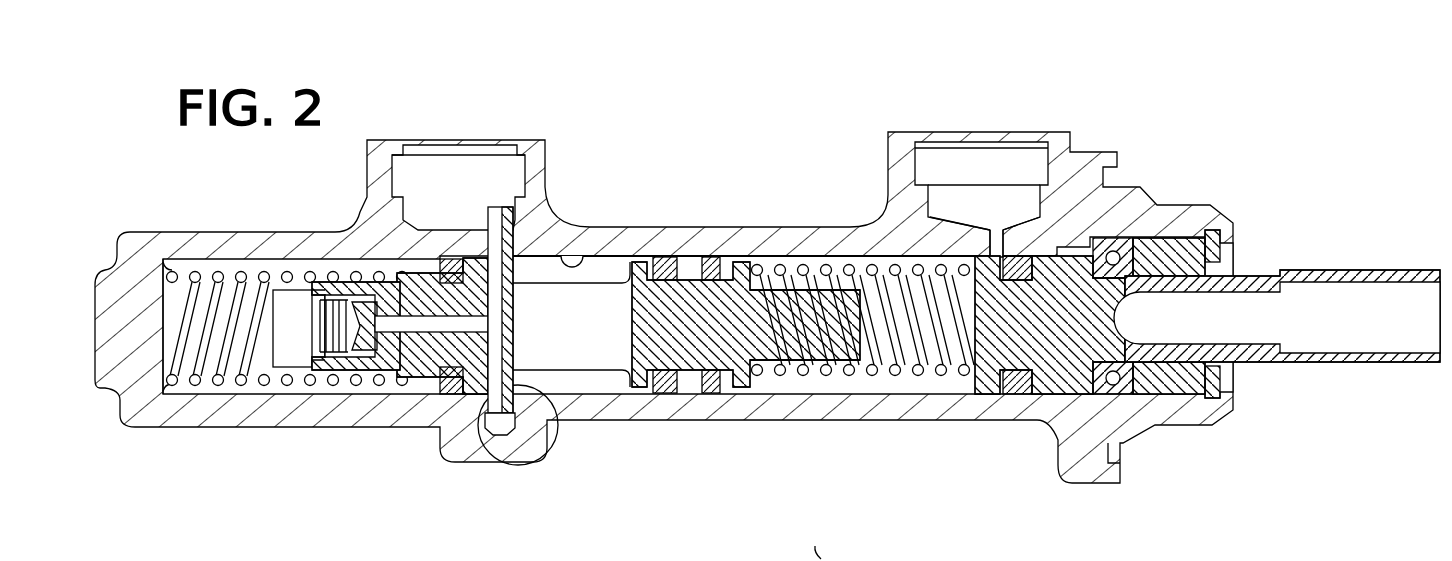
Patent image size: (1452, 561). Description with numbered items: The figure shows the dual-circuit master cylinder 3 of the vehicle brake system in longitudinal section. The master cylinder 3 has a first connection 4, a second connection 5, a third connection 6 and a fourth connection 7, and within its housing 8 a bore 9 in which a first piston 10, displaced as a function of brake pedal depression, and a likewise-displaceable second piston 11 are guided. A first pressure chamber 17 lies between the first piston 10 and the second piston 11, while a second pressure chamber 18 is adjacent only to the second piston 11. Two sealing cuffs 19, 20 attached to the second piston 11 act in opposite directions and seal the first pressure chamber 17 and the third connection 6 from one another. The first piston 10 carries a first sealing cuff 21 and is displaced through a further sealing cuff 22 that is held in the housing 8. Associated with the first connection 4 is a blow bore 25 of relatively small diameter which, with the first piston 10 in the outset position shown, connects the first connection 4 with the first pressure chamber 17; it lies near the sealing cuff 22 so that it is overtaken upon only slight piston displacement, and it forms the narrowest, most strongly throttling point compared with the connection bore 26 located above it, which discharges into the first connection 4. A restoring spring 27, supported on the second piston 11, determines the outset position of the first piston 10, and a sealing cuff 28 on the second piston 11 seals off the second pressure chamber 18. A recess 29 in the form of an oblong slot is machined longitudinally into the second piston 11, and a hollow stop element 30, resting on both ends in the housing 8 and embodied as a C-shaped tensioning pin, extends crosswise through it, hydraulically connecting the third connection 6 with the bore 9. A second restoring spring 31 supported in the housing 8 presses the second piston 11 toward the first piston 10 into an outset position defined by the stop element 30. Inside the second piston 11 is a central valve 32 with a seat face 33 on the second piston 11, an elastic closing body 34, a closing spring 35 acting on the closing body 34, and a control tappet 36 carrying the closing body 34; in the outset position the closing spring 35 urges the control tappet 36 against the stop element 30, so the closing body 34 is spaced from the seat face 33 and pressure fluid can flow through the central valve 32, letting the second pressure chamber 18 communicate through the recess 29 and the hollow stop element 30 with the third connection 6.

The master cylinder 3 is at (690, 183).
The first connection 4 is at (1026, 163).
The second connection 5 is at (758, 405).
The third connection 6 is at (451, 170).
The fourth connection 7 is at (213, 418).
The housing 8 is at (763, 235).
The bore 9 is at (586, 258).
The first piston 10 is at (955, 372).
The second piston 11 is at (495, 455).
The first pressure chamber 17 is at (910, 380).
The second pressure chamber 18 is at (246, 383).
The sealing cuff 19 is at (720, 256).
The sealing cuff 20 is at (668, 256).
The first sealing cuff 21 is at (1028, 388).
The further sealing cuff 22 is at (1130, 395).
The blow bore 25 is at (992, 232).
The connection bore 26 is at (1001, 232).
The restoring spring 27 is at (878, 268).
The sealing cuff 28 is at (452, 400).
The recess 29 is at (608, 340).
The hollow stop element 30 is at (556, 423).
The second restoring spring 31 is at (215, 262).
The central valve 32 is at (363, 385).
The seat face 33 is at (385, 383).
The closing body 34 is at (365, 303).
The closing spring 35 is at (320, 292).
The control tappet 36 is at (425, 392).